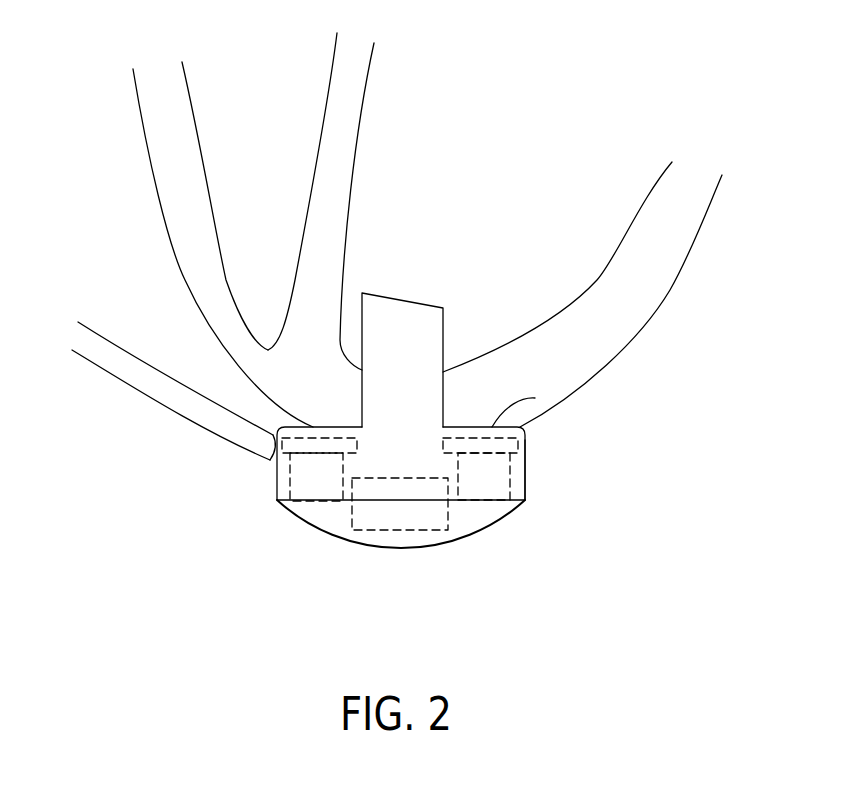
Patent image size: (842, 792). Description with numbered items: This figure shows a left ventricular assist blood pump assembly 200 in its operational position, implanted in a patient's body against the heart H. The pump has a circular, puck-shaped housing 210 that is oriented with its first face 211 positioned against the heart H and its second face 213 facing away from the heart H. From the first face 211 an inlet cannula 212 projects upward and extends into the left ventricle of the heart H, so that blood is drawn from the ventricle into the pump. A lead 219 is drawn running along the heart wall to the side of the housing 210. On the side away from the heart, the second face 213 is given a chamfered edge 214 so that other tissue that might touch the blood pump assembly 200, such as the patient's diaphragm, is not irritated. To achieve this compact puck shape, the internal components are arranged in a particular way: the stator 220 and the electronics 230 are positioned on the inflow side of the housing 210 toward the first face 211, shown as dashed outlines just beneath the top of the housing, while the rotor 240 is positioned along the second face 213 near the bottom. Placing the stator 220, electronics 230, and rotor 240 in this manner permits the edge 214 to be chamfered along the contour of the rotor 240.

The heart H is at (646, 99).
The left ventricular assist blood pump assembly 200 is at (374, 447).
The housing 210 is at (413, 535).
The first face 211 is at (535, 398).
The inlet cannula 212 is at (452, 328).
The second face 213 is at (328, 533).
The chamfered edge 214 is at (525, 500).
The lead 219 is at (150, 403).
The stator 220 is at (290, 477).
The electronics 230 is at (266, 452).
The rotor 240 is at (438, 540).